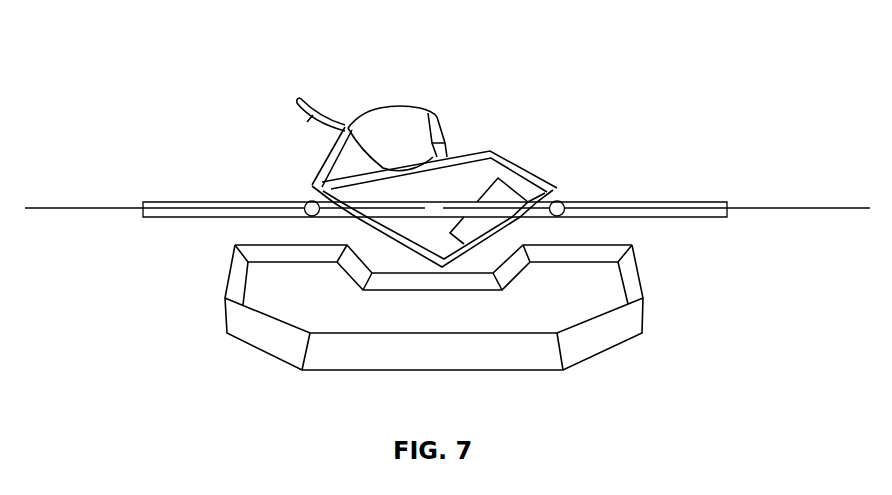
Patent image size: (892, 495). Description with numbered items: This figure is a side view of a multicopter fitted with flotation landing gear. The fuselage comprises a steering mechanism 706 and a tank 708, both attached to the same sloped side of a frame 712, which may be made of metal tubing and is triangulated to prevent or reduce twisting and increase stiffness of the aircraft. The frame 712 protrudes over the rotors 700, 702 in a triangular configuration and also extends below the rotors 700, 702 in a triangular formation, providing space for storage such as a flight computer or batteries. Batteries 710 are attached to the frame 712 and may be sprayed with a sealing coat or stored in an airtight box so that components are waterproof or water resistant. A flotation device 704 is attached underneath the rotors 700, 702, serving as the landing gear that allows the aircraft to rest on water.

The rotor 700 is at (160, 218).
The rotor 702 is at (705, 218).
The flotation device 704 is at (222, 315).
The steering mechanism 706 is at (308, 115).
The tank 708 is at (445, 125).
The batteries 710 is at (517, 185).
The frame 712 is at (553, 199).